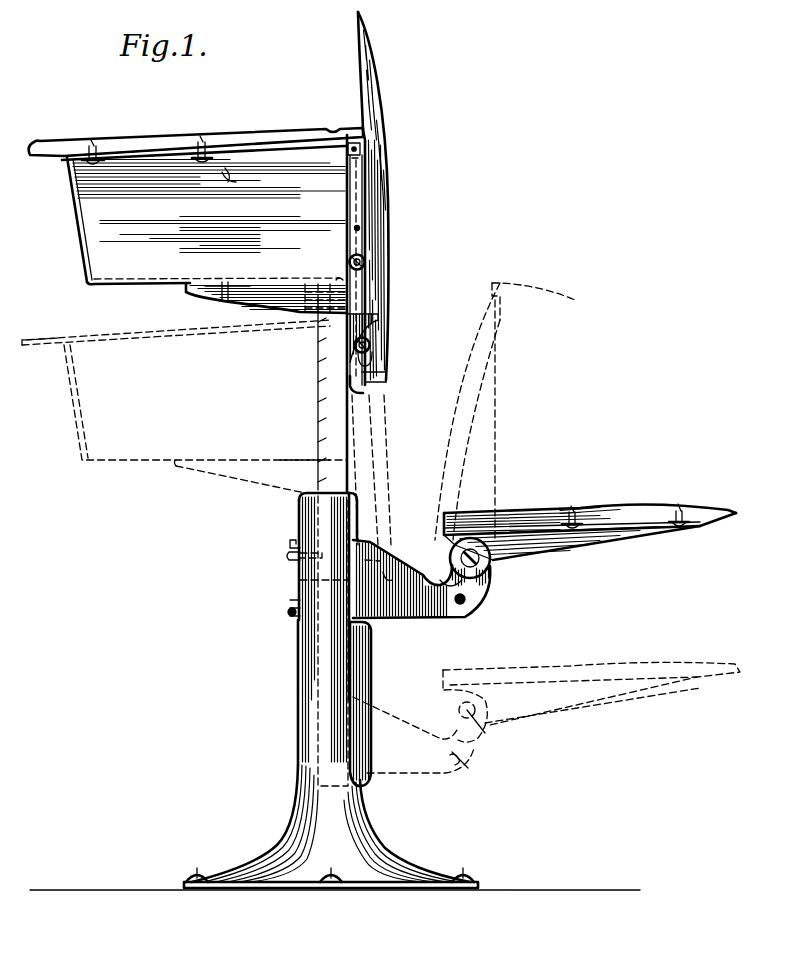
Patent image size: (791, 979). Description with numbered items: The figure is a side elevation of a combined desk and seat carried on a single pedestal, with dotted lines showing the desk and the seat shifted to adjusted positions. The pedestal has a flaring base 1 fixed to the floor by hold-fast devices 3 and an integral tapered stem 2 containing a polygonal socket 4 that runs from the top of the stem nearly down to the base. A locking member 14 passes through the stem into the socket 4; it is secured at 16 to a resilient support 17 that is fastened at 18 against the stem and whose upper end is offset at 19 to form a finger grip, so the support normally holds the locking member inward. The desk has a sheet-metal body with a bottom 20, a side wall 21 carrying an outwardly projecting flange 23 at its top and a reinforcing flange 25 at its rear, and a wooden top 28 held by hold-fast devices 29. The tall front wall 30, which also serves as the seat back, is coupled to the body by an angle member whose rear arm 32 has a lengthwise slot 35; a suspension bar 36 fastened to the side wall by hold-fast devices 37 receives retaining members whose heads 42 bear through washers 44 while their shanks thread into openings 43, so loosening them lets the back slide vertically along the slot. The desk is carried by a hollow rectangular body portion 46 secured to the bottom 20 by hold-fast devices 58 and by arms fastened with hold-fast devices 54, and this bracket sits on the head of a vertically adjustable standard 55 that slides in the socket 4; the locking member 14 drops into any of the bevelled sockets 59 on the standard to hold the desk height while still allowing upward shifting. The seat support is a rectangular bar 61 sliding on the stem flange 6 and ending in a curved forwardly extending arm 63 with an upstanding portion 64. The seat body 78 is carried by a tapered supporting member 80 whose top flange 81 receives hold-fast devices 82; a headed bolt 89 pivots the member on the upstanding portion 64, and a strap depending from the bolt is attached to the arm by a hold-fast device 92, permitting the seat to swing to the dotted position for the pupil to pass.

The base 1 is at (286, 822).
The stem 2 is at (298, 680).
The hold-fast devices 3 is at (200, 875).
The polygonal-shaped socket 4 is at (325, 792).
The angle-shaped flange 6 is at (364, 753).
The locking member 14 is at (300, 575).
The securing point 16 is at (290, 558).
The resilient support 17 is at (290, 601).
The securing point of support 18 is at (290, 614).
The offset finger hold 19 is at (289, 542).
The desk bottom 20 is at (130, 284).
The side wall 21 is at (175, 272).
The outwardly projecting flange 23 is at (196, 160).
The reinforcing flange 25 is at (76, 223).
The top 28 is at (257, 138).
The hold-fast devices 29 is at (95, 163).
The front wall 30 is at (372, 75).
The rear arm 32 is at (375, 375).
The lengthwise slot 35 is at (352, 203).
The suspension bar 36 is at (346, 150).
The hold-fast devices 37 is at (350, 163).
The enlarged head 42 is at (366, 262).
The openings 43 is at (354, 229).
The washer 44 is at (354, 262).
The hollow rectangular body portion 46 is at (282, 303).
The hold-fast devices 54 is at (226, 284).
The vertically adjustable standard 55 is at (318, 375).
The hold-fast devices 58 is at (330, 281).
The sockets 59 is at (318, 453).
The rectangular bar 61 is at (358, 596).
The curved forwardly extending arm 63 is at (392, 614).
The upstanding portion 64 is at (448, 553).
The seat body portion 78 is at (484, 321).
The supporting member 80 is at (486, 447).
The outwardly extending flange 81 is at (650, 525).
The hold-fast devices 82 is at (585, 536).
The headed bolt 89 is at (478, 571).
The hold-fast device 92 is at (472, 607).